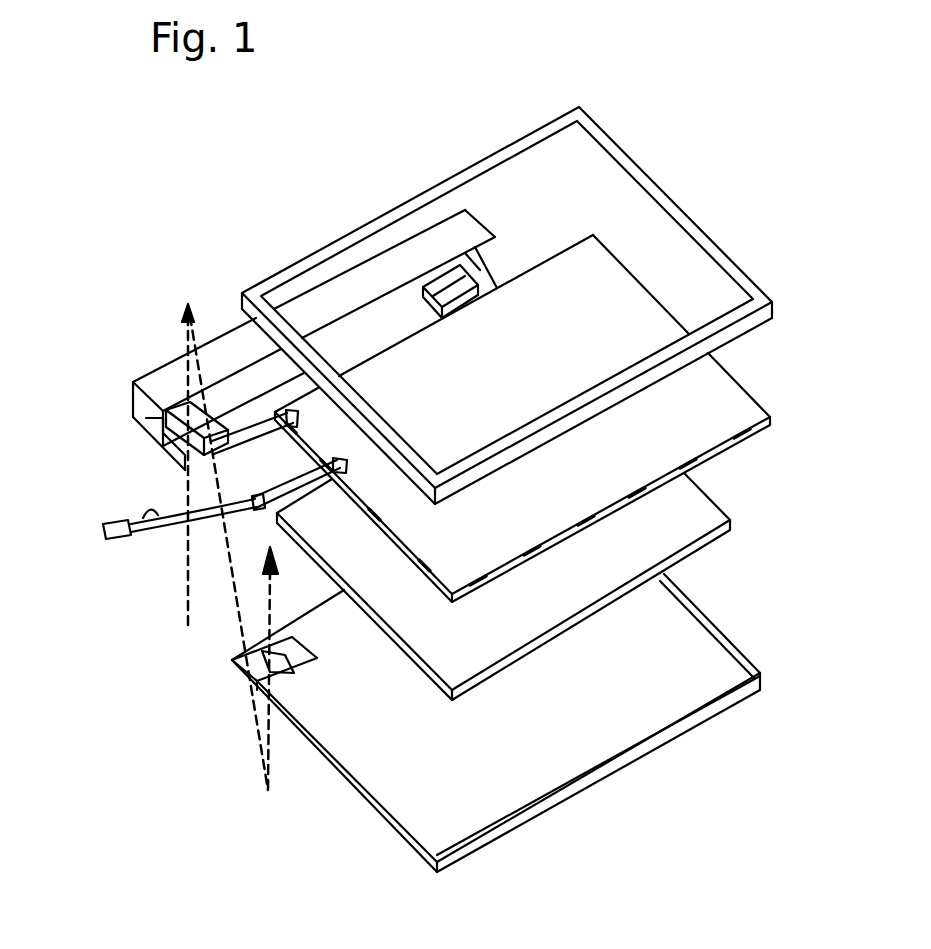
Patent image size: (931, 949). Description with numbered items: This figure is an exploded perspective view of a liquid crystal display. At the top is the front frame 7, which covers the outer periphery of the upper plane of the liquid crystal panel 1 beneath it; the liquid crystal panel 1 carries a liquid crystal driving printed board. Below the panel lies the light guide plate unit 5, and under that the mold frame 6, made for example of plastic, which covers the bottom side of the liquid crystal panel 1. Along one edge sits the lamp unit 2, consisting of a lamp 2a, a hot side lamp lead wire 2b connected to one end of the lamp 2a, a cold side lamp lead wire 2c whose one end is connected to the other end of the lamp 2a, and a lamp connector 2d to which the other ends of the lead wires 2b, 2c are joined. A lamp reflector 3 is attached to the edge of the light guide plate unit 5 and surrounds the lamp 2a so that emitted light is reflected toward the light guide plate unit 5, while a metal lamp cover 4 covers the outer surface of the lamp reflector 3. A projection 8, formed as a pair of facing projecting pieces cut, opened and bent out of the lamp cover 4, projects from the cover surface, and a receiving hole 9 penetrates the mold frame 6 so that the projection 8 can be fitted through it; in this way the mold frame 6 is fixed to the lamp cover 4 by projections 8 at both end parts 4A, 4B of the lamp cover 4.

The liquid crystal panel 1 is at (710, 417).
The lamp unit 2 is at (195, 565).
The lamp 2a is at (258, 502).
The hot side lamp lead wire 2b is at (163, 545).
The cold side lamp lead wire 2c is at (141, 540).
The lamp connector 2d is at (107, 538).
The lamp reflector 3 is at (210, 447).
The lamp cover 4 is at (223, 352).
The end part of lamp cover 4A is at (162, 443).
The end part of lamp cover 4B is at (474, 272).
The light guide plate unit 5 is at (718, 511).
The mold frame 6 is at (763, 670).
The front frame 7 is at (757, 305).
The projection 8 is at (140, 412).
The receiving hole 9 is at (288, 662).